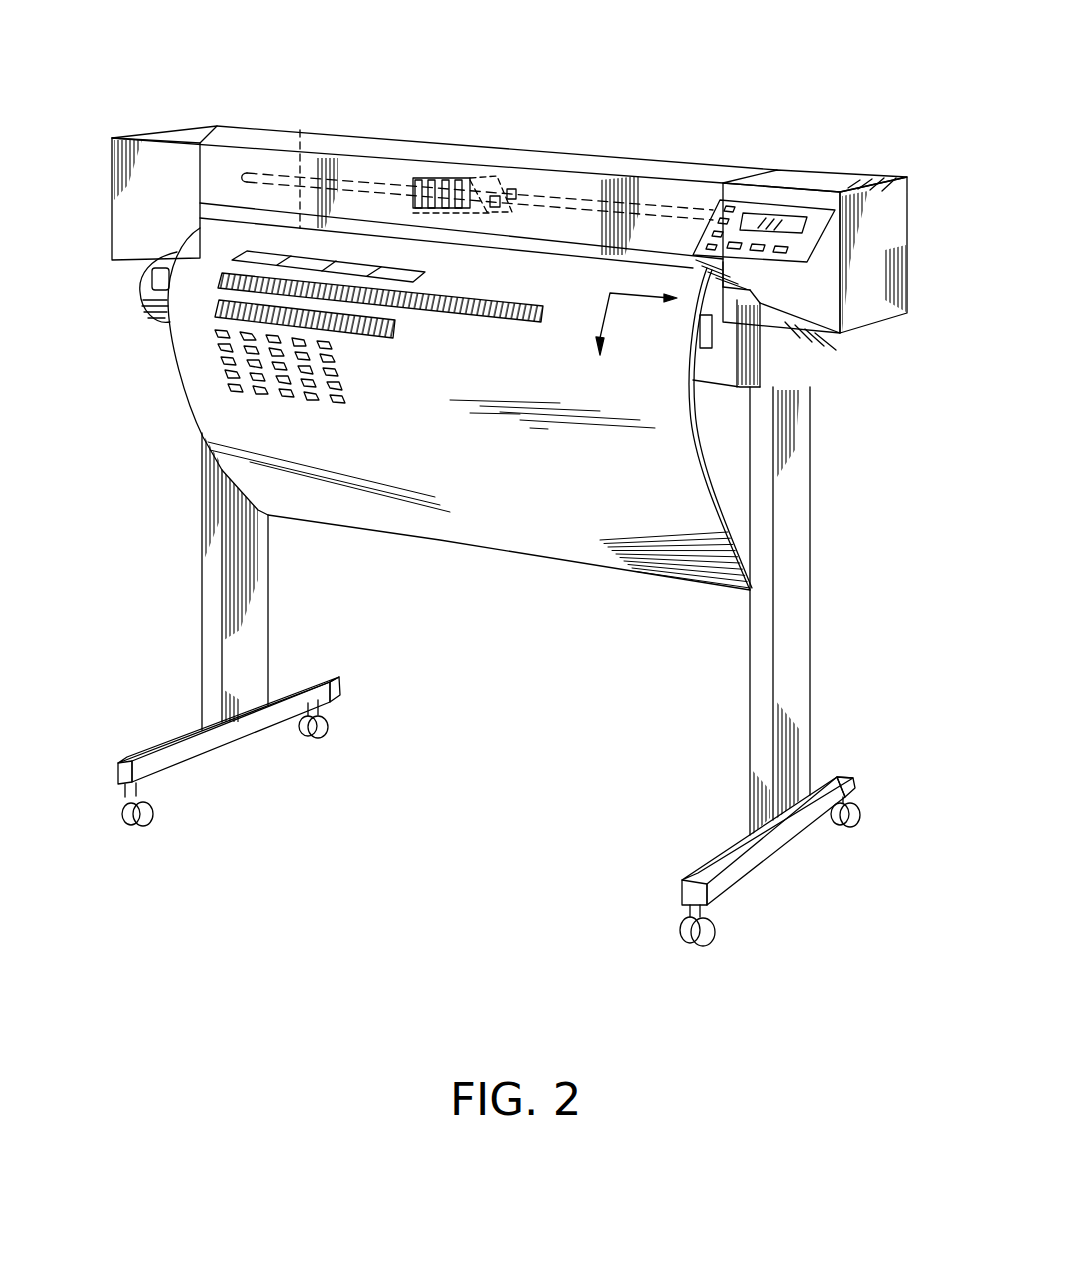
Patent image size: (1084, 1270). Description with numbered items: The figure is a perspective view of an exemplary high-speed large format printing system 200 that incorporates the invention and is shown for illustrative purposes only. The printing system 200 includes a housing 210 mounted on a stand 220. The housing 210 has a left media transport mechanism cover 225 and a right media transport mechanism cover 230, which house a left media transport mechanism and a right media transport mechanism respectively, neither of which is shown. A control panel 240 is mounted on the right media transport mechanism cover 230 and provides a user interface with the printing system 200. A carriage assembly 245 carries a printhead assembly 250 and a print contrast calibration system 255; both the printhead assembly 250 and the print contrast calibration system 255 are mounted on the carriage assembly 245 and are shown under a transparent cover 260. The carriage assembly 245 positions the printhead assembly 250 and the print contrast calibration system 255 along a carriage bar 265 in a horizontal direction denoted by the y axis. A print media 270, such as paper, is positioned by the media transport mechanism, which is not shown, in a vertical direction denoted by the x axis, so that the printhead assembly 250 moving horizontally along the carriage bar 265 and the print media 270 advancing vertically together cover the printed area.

The printing system 200 is at (546, 698).
The housing 210 is at (903, 215).
The stand 220 is at (807, 542).
The left media transport mechanism cover 225 is at (193, 138).
The right media transport mechanism cover 230 is at (820, 180).
The control panel 240 is at (763, 257).
The carriage assembly 245 is at (428, 177).
The printhead assembly 250 is at (497, 163).
The print contrast calibration system 255 is at (503, 200).
The transparent cover 260 is at (710, 170).
The carriage bar 265 is at (613, 200).
The print media 270 is at (432, 520).